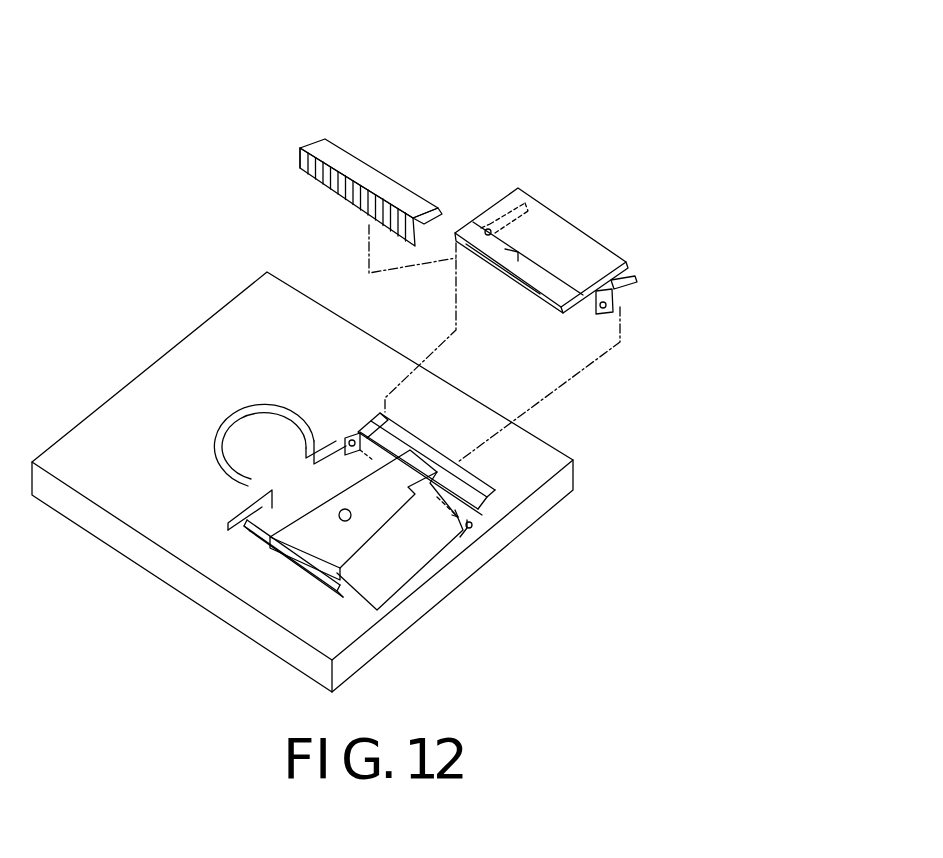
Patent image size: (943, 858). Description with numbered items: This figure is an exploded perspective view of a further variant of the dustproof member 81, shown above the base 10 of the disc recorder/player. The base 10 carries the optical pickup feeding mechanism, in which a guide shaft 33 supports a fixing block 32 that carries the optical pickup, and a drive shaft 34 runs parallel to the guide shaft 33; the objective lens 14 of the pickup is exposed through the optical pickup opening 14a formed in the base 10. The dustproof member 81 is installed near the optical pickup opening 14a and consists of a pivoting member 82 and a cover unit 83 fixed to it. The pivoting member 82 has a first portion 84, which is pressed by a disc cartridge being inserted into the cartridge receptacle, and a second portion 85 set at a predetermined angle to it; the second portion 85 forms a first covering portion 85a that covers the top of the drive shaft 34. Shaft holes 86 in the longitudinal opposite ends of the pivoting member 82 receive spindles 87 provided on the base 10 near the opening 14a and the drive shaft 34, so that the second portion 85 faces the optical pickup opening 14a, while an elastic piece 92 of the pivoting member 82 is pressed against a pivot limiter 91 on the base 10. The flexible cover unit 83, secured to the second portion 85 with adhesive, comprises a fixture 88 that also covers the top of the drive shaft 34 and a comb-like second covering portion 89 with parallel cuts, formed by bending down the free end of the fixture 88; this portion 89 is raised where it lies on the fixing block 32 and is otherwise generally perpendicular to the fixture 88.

The base 10 is at (477, 565).
The objective lens 14 is at (343, 511).
The optical pickup opening 14a is at (255, 512).
The fixing block 32 is at (372, 542).
The guide shaft 33 is at (307, 582).
The drive shaft 34 is at (467, 472).
The dustproof member 81 is at (487, 110).
The pivoting member 82 is at (540, 212).
The cover unit 83 is at (326, 140).
The first portion 84 is at (600, 252).
The second portion 85 is at (551, 289).
The first covering portion 85a is at (503, 268).
The shaft holes 86 is at (487, 222).
The spindles 87 is at (352, 440).
The fixture 88 is at (352, 161).
The second covering portion 89 is at (312, 167).
The pivot limiter 91 is at (492, 498).
The elastic piece 92 is at (638, 283).